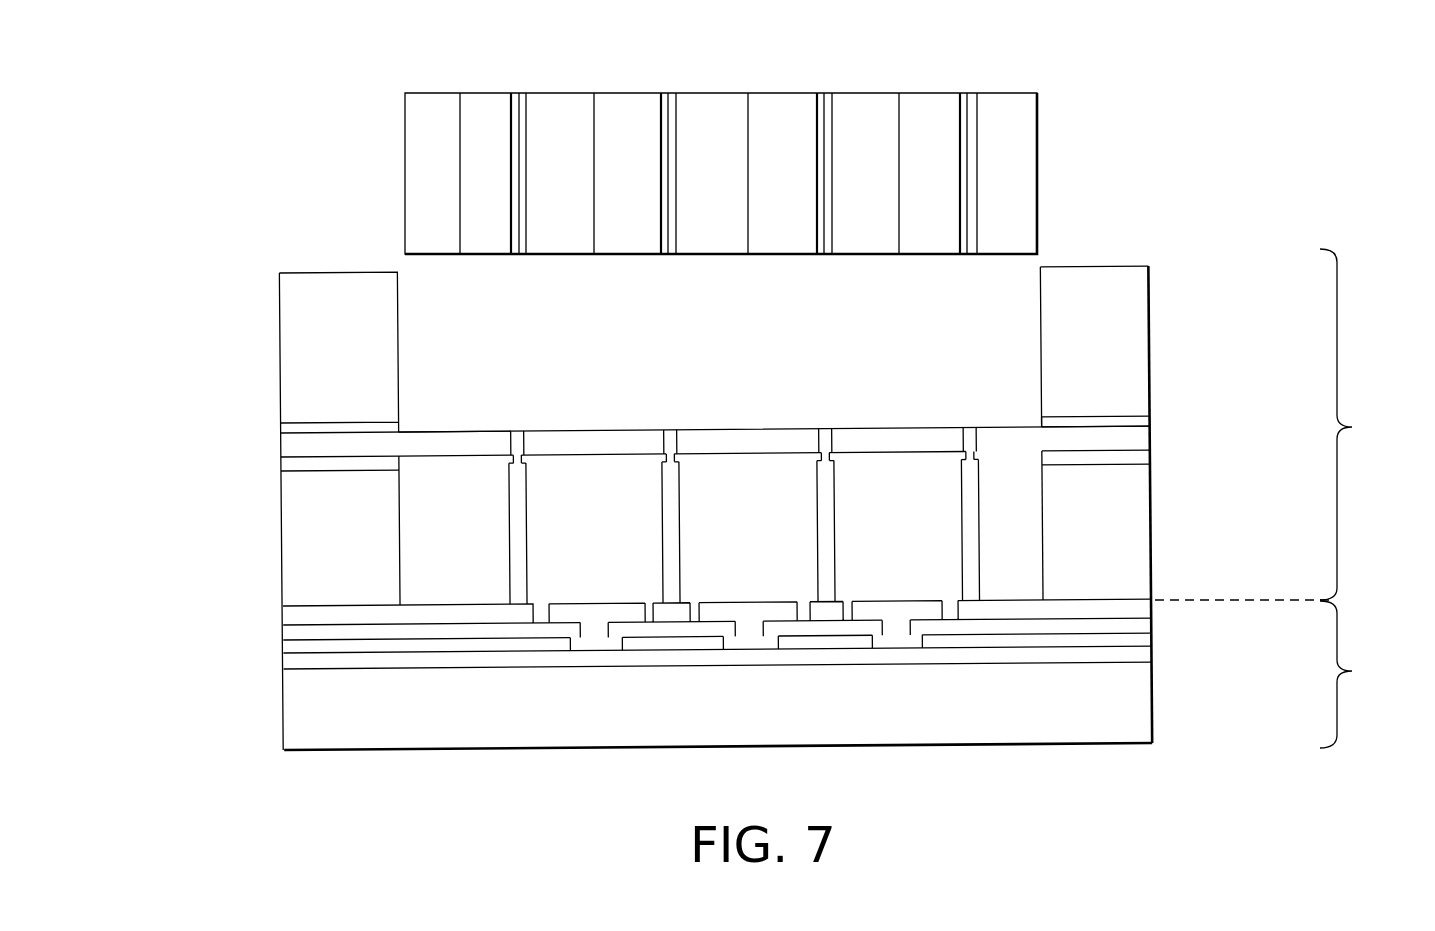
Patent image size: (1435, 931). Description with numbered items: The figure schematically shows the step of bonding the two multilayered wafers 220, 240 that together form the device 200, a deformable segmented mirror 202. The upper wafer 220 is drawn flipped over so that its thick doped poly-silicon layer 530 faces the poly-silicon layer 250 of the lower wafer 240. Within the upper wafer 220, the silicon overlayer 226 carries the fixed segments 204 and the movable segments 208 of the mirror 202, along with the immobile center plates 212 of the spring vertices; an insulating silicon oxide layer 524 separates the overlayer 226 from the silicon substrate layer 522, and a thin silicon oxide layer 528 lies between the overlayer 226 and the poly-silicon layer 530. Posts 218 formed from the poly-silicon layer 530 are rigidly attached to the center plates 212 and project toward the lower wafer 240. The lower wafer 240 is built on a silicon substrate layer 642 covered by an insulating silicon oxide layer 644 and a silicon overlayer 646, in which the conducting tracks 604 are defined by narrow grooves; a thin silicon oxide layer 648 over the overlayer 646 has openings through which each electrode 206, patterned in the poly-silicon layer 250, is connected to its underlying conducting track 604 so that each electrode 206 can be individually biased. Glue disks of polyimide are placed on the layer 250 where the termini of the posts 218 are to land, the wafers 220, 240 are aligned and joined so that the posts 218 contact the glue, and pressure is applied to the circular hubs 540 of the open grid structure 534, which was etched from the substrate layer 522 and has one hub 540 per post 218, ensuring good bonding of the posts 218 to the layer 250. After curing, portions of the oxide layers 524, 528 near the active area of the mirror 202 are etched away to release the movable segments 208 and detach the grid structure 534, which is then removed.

The device 200 is at (245, 334).
The segmented mirror 202 is at (536, 328).
The fixed segments 204 is at (432, 432).
The electrodes 206 is at (575, 603).
The movable segments 208 is at (557, 432).
The center plate 212 is at (668, 432).
The posts 218 is at (530, 525).
The wafer 220 is at (1364, 424).
The overlayer 226 is at (292, 445).
The wafer 240 is at (1364, 674).
The poly-silicon layer 250 is at (1150, 598).
The substrate layer 522 is at (1140, 301).
The insulating silicon oxide layer 524 is at (1148, 418).
The silicon oxide layer 528 is at (1150, 460).
The doped poly-silicon layer 530 is at (1130, 540).
The grid structure 534 is at (342, 147).
The hubs 540 is at (527, 77).
The conducting tracks 604 is at (597, 645).
The silicon substrate layer 642 is at (1150, 710).
The insulating silicon oxide layer 644 is at (1150, 653).
The silicon overlayer 646 is at (1150, 637).
The silicon oxide layer 648 is at (1150, 620).